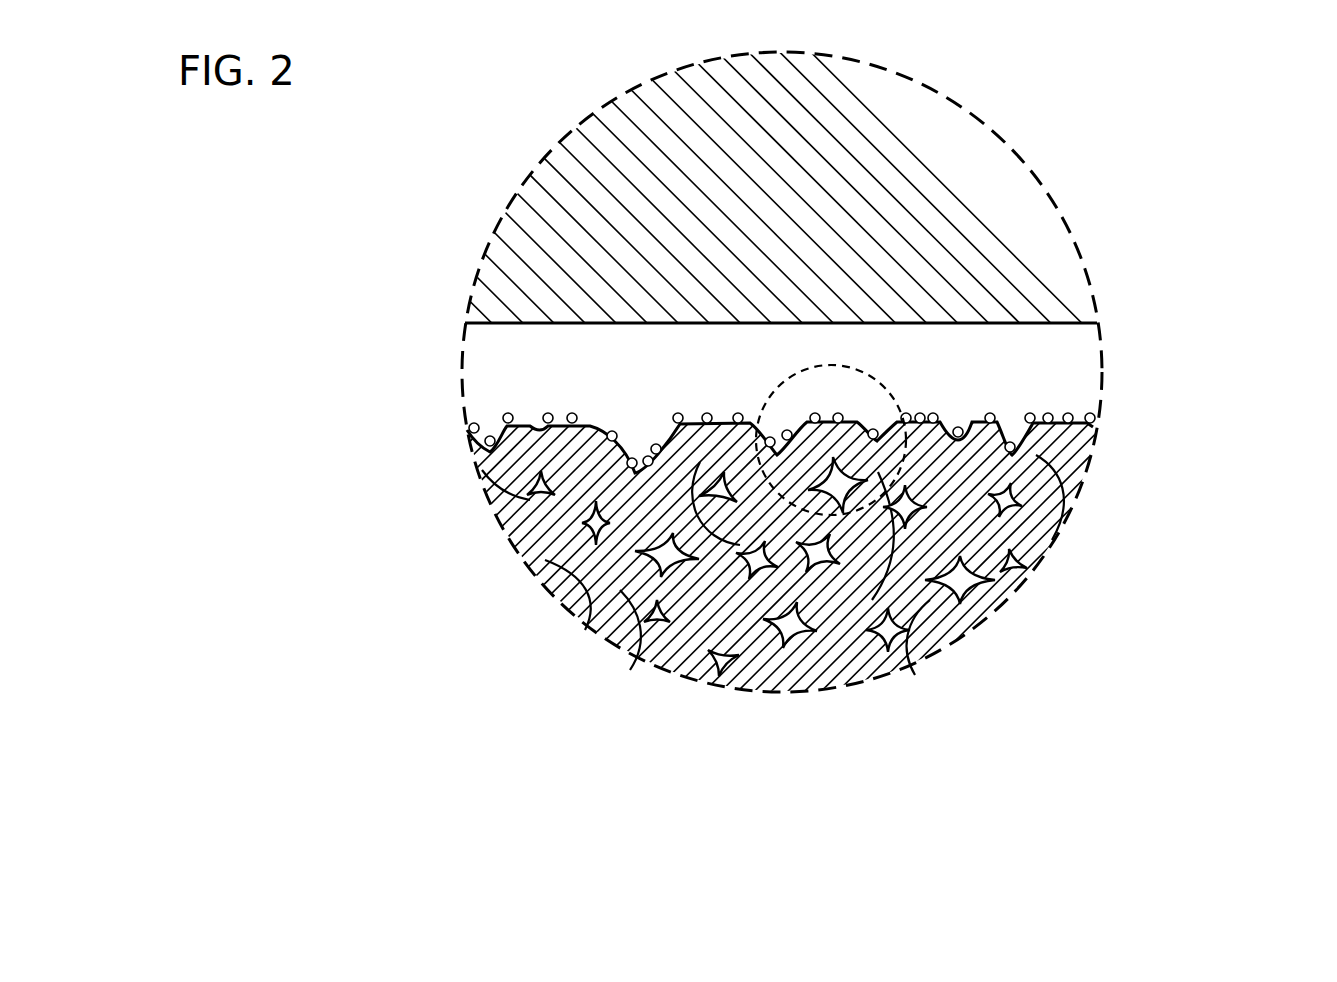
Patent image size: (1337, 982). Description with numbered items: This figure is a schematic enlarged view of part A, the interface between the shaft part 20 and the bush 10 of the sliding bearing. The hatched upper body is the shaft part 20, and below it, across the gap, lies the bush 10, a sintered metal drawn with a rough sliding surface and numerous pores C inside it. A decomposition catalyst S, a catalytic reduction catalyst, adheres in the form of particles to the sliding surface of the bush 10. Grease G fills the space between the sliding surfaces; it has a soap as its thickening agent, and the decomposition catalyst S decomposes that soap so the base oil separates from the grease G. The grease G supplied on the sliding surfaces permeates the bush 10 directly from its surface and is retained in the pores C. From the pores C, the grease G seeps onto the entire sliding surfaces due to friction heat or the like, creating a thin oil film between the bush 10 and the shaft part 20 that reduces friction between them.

The shaft part 20 is at (1051, 198).
The bush 10 is at (1039, 560).
The decomposition catalyst S is at (680, 422).
The grease G is at (988, 364).
The pores C is at (600, 555).
The part A is at (905, 460).